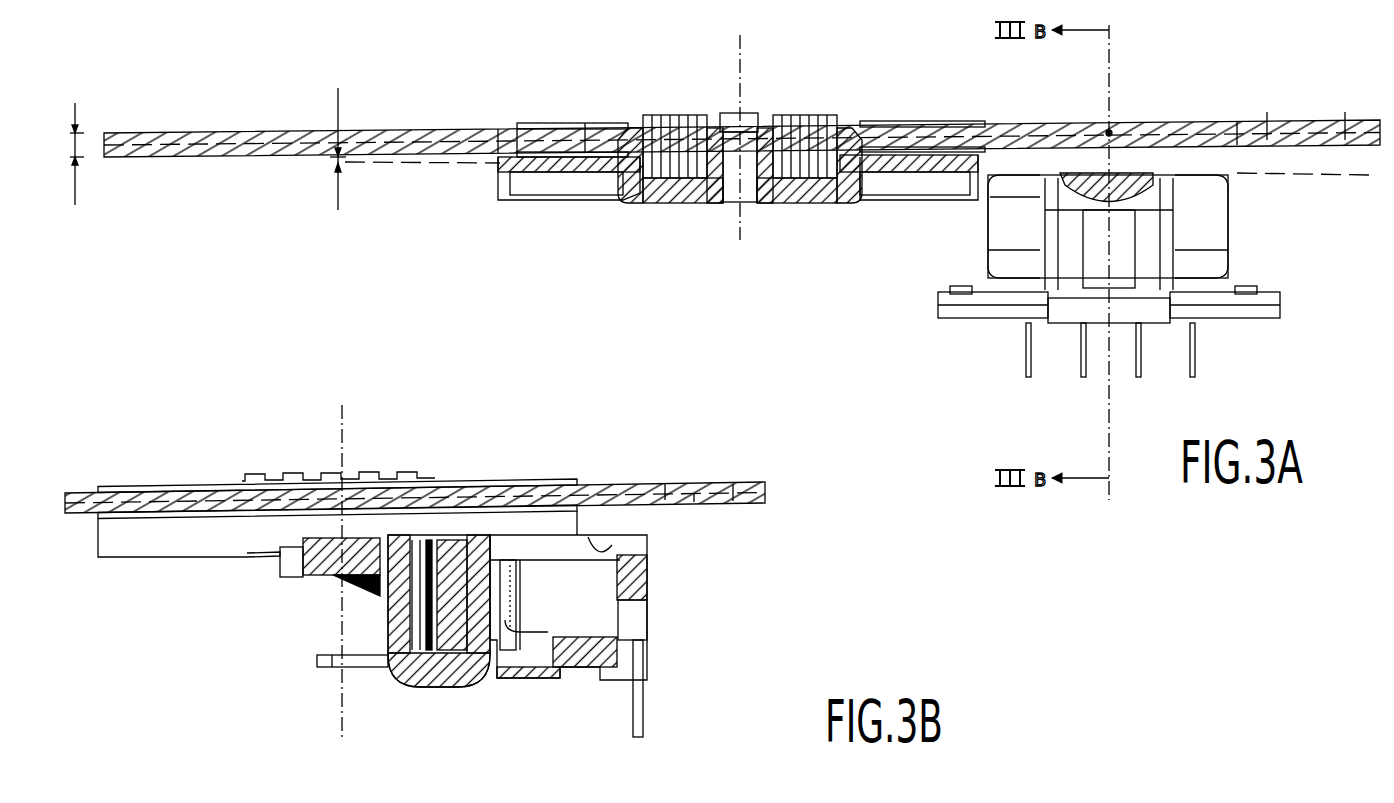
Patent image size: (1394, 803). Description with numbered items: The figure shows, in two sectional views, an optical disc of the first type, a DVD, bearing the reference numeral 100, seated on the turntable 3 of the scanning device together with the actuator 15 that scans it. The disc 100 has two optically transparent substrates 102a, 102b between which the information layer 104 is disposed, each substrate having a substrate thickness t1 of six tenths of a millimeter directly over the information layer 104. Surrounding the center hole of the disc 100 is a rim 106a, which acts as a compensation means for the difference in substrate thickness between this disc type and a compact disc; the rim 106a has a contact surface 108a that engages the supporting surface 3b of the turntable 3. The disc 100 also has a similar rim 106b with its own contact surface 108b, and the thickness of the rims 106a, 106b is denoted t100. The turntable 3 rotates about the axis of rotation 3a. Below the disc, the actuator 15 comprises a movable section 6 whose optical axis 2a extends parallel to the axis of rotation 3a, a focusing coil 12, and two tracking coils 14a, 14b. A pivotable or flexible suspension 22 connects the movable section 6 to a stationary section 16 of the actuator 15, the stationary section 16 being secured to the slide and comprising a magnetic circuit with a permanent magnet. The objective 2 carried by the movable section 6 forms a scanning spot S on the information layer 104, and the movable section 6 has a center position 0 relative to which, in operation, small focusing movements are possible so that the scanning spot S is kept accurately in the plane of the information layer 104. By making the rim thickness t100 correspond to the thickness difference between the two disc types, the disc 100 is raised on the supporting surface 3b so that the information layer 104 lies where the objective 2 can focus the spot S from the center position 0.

In FIG. 3A, the optical disc 100 is at (250, 186).
In FIG. 3B, the optical disc 100 is at (740, 515).
In FIG. 3A, the substrate 102a is at (1350, 115).
In FIG. 3B, the substrate 102a is at (694, 503).
In FIG. 3A, the substrate 102b is at (1277, 115).
In FIG. 3B, the substrate 102b is at (665, 490).
In FIG. 3A, the information layer 104 is at (1237, 133).
In FIG. 3B, the information layer 104 is at (733, 482).
In FIG. 3A, the rim 106a is at (497, 160).
In FIG. 3A, the rim 106b is at (499, 128).
In FIG. 3A, the contact surface 108a is at (978, 168).
In FIG. 3A, the contact surface 108b is at (528, 112).
In FIG. 3A, the turntable 3 is at (545, 186).
In FIG. 3B, the turntable 3 is at (158, 545).
In FIG. 3A, the axis of rotation 3a is at (743, 58).
In FIG. 3B, the axis of rotation 3a is at (346, 430).
In FIG. 3A, the supporting surface 3b is at (585, 150).
In FIG. 3B, the supporting surface 3b is at (137, 487).
In FIG. 3A, the objective 2 is at (1094, 176).
In FIG. 3B, the objective 2 is at (323, 578).
In FIG. 3A, the optical axis 2a is at (1112, 58).
In FIG. 3B, the optical axis 2a is at (343, 718).
In FIG. 3A, the movable section 6 is at (1005, 198).
In FIG. 3B, the movable section 6 is at (285, 565).
In FIG. 3B, the focusing coil 12 is at (452, 665).
In FIG. 3A, the tracking coil 14a is at (1213, 234).
In FIG. 3A, the tracking coil 14b is at (1005, 233).
In FIG. 3B, the tracking coil 14b is at (429, 660).
In FIG. 3A, the actuator 15 is at (1104, 283).
In FIG. 3B, the actuator 15 is at (546, 586).
In FIG. 3B, the stationary section 16 is at (403, 672).
In FIG. 3B, the suspension 22 is at (535, 545).
In FIG. 3A, the scanning spot S is at (1108, 131).
In FIG. 3A, the center position 0 is at (1338, 175).
In FIG. 3A, the substrate thickness t1 is at (82, 150).
In FIG. 3A, the rim thickness t100 is at (340, 168).